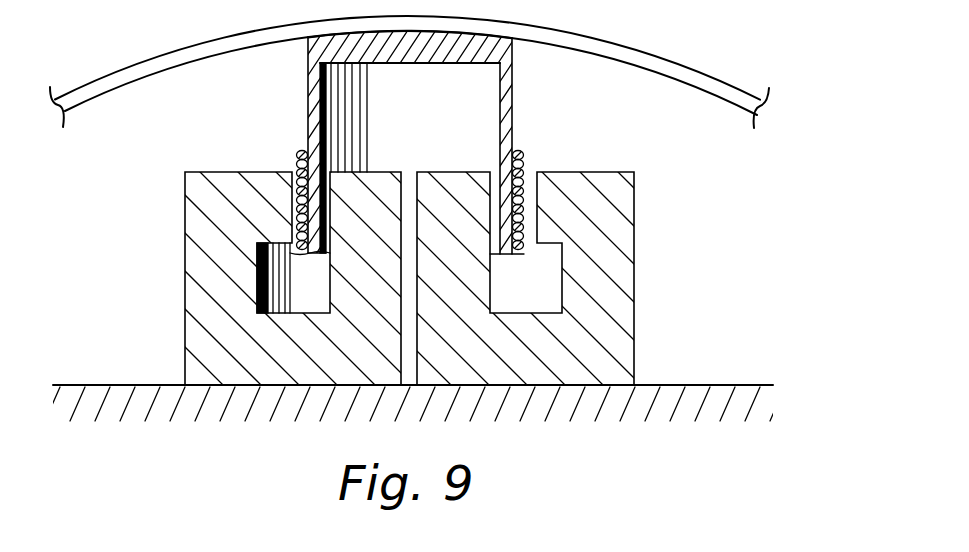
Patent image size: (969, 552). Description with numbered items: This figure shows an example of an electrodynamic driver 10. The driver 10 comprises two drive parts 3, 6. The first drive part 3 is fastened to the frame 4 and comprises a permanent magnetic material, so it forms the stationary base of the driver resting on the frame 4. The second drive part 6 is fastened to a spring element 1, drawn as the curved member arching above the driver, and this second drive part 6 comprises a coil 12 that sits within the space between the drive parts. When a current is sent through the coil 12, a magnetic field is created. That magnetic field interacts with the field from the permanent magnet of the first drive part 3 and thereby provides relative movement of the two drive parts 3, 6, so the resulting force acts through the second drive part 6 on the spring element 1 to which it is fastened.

The spring element 1 is at (171, 55).
The first drive part 3 is at (185, 232).
The frame 4 is at (704, 383).
The second drive part 6 is at (307, 98).
The driver 10 is at (415, 267).
The coil 12 is at (522, 152).